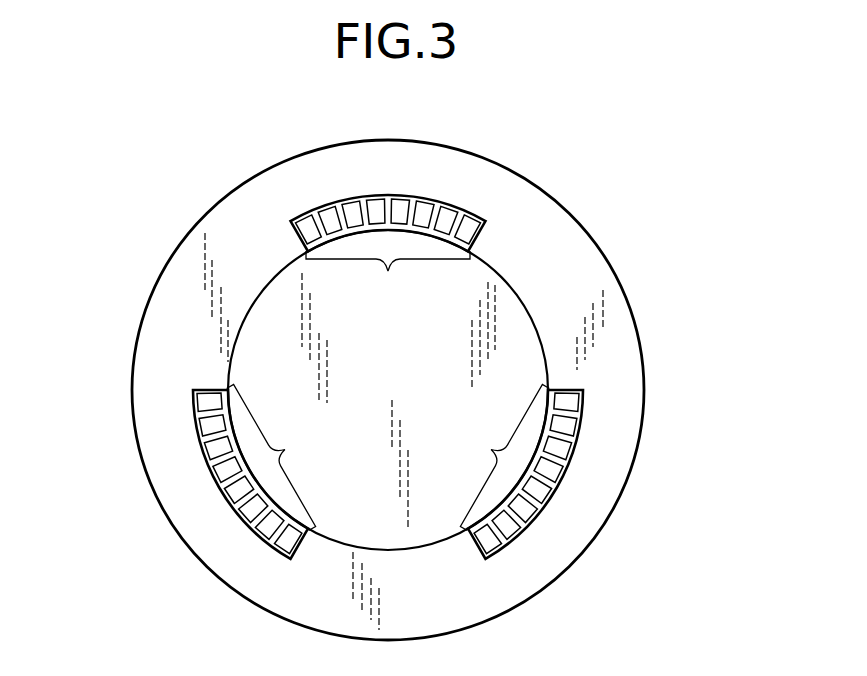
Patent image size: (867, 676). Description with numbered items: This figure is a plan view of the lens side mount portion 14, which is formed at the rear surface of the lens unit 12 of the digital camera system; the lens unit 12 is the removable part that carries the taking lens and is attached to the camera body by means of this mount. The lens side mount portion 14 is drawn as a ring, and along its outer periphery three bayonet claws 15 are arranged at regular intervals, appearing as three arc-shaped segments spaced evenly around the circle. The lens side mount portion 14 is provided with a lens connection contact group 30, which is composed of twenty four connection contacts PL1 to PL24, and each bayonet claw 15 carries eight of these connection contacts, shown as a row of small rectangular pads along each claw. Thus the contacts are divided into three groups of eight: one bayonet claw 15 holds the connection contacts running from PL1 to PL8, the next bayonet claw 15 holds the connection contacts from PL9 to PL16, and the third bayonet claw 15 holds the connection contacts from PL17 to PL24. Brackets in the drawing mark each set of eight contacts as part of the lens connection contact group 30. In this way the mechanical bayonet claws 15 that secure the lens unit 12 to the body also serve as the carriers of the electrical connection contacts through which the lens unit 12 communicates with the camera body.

The lens unit 12 is at (458, 132).
The lens side mount portion 14 is at (542, 308).
The bayonet claw 15 is at (378, 196).
The lens connection contact group 30 is at (388, 391).
The connection contact PL1 is at (312, 222).
The connection contact PL8 is at (462, 222).
The connection contact PL9 is at (566, 396).
The connection contact PL16 is at (495, 537).
The connection contact PL17 is at (281, 534).
The connection contact PL24 is at (206, 394).